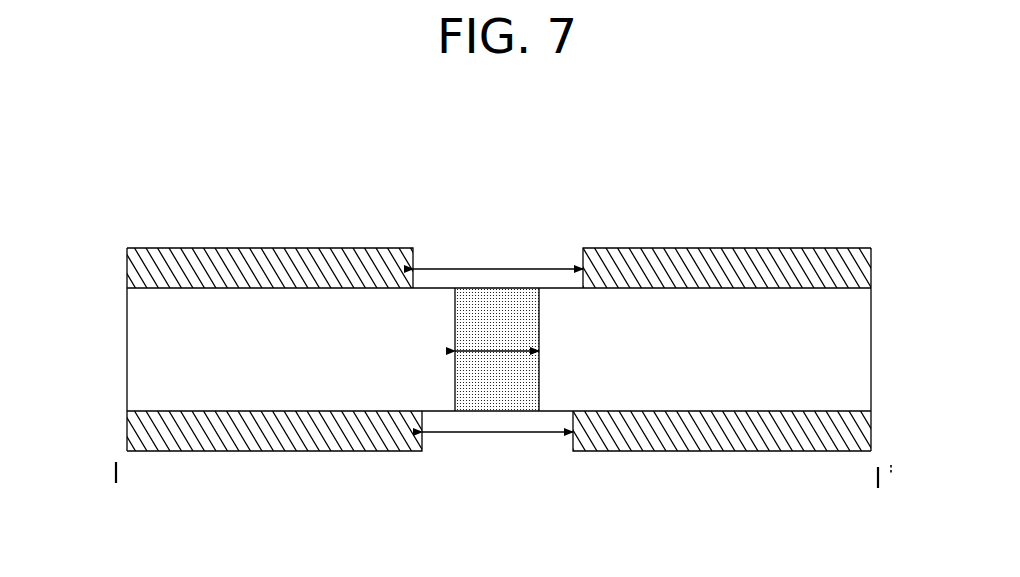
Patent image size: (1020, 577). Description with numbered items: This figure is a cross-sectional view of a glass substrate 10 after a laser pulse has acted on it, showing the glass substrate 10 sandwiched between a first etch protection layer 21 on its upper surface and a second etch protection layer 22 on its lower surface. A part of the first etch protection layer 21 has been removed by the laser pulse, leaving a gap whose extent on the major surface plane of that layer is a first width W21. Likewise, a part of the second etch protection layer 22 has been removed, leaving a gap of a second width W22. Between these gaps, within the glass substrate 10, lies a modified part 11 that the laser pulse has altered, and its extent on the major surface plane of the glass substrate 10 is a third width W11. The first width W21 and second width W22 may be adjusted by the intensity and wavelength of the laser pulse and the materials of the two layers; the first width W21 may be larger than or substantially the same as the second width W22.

The glass substrate 10 is at (127, 346).
The modified part 11 is at (497, 303).
The first etch protection layer 21 is at (127, 266).
The second etch protection layer 22 is at (127, 426).
The first width W21 is at (452, 268).
The third width W11 is at (497, 352).
The second width W22 is at (530, 434).